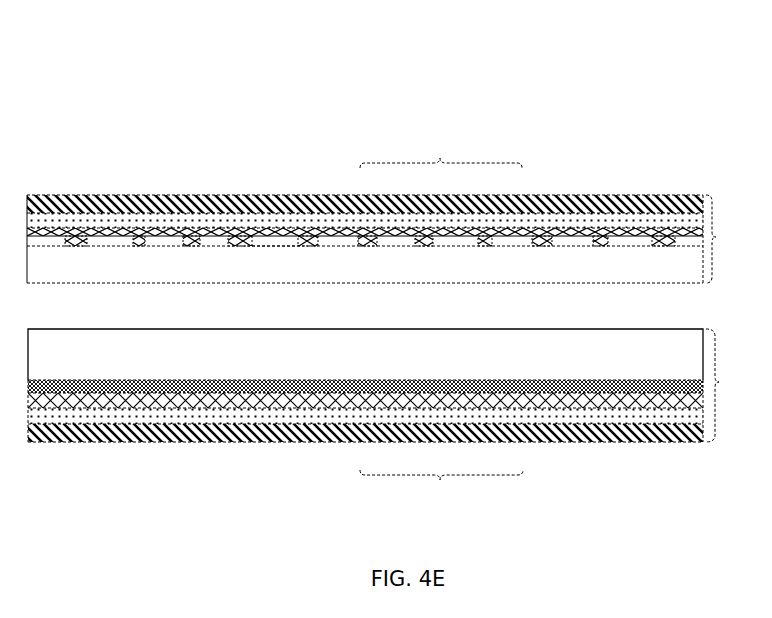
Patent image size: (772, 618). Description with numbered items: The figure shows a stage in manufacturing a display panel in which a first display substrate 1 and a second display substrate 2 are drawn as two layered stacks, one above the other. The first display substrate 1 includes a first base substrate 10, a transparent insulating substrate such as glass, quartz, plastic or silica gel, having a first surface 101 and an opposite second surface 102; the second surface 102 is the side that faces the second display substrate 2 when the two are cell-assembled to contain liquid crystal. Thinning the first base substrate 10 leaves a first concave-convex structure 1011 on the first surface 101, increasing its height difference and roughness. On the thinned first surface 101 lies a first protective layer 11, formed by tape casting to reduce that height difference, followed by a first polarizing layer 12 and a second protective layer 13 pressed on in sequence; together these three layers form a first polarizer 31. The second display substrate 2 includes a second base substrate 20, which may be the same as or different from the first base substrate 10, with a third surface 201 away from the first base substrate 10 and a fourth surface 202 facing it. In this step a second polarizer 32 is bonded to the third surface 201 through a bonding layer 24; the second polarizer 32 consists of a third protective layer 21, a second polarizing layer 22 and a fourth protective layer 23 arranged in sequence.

The first display substrate 1 is at (377, 225).
The second display substrate 2 is at (379, 400).
The first base substrate 10 is at (421, 272).
The first surface 101 is at (488, 246).
The first concave-convex structure 1011 is at (275, 241).
The second surface 102 is at (590, 283).
The first protective layer 11 is at (489, 228).
The first polarizing layer 12 is at (413, 223).
The second protective layer 13 is at (335, 195).
The first polarizer 31 is at (441, 152).
The second base substrate 20 is at (161, 343).
The third surface 201 is at (251, 383).
The fourth surface 202 is at (348, 329).
The third protective layer 21 is at (484, 405).
The second polarizing layer 22 is at (413, 410).
The fourth protective layer 23 is at (334, 437).
The bonding layer 24 is at (221, 428).
The second polarizer 32 is at (441, 483).